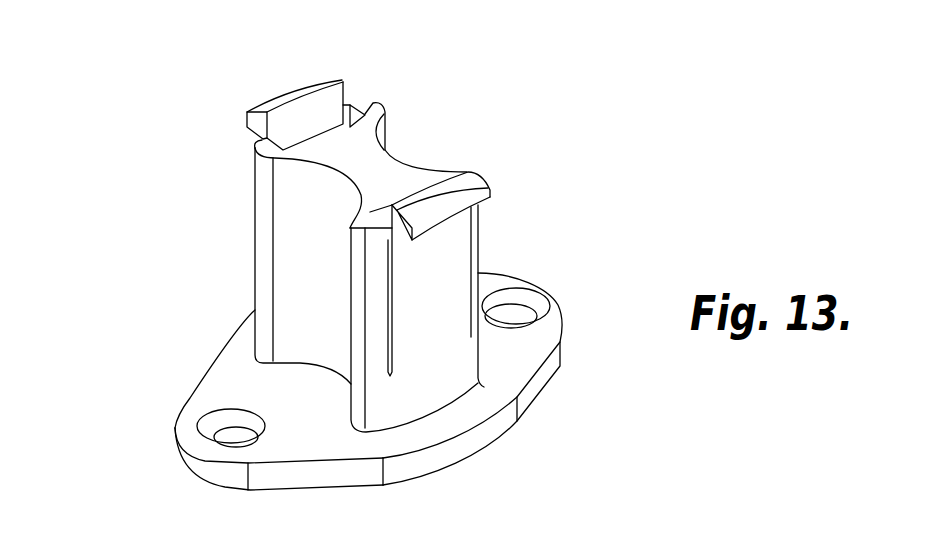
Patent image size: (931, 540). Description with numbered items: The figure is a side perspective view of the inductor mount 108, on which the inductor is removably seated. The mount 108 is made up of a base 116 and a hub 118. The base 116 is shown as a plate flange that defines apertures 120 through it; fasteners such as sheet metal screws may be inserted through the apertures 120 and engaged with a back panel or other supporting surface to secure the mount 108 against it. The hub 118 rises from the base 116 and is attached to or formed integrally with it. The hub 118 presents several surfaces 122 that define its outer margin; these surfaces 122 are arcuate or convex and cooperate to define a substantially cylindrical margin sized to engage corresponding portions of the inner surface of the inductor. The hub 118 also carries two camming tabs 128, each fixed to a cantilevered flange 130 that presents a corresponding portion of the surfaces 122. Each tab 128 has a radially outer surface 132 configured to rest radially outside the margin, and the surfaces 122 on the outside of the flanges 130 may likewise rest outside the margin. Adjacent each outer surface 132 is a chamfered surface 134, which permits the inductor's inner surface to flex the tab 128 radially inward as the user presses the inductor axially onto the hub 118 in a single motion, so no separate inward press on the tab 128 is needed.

The mount 108 is at (153, 115).
The base 116 is at (207, 383).
The hub 118 is at (232, 228).
The apertures 120 is at (205, 419).
The surfaces 122 is at (257, 148).
The camming tabs 128 is at (287, 78).
The cantilevered flange 130 is at (452, 335).
The radially outer surfaces 132 is at (490, 212).
The chamfered surface 134 is at (267, 108).